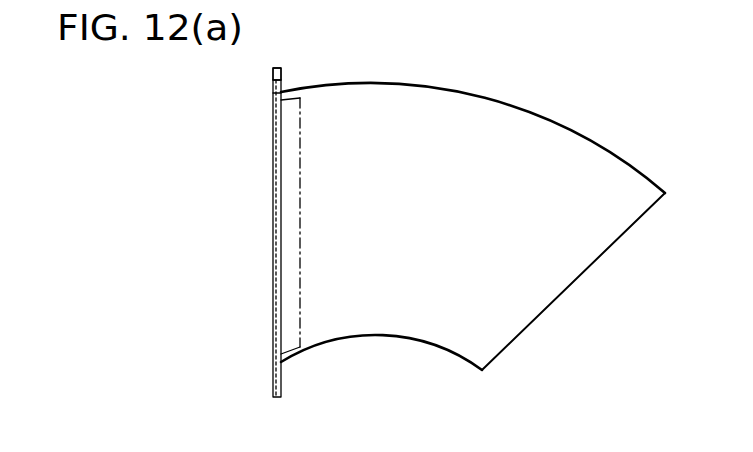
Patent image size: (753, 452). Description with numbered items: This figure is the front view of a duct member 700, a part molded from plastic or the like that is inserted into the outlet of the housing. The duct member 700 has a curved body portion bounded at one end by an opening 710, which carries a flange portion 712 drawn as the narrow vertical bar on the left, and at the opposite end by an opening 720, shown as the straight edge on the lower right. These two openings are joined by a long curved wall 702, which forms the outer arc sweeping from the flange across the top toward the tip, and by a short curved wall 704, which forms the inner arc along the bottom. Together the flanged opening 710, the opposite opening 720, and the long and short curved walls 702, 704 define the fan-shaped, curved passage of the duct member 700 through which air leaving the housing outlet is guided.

The duct member 700 is at (473, 216).
The long curved wall 702 is at (571, 130).
The short curved wall 704 is at (369, 335).
The opening 710 is at (274, 223).
The flange portion 712 is at (274, 86).
The opening 720 is at (565, 295).